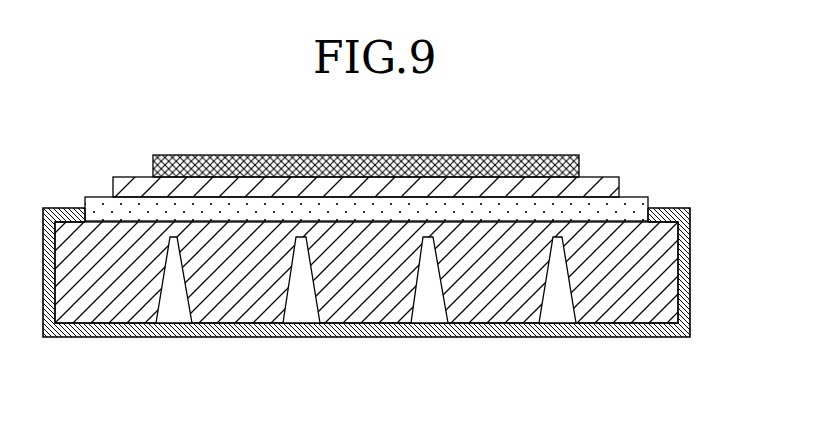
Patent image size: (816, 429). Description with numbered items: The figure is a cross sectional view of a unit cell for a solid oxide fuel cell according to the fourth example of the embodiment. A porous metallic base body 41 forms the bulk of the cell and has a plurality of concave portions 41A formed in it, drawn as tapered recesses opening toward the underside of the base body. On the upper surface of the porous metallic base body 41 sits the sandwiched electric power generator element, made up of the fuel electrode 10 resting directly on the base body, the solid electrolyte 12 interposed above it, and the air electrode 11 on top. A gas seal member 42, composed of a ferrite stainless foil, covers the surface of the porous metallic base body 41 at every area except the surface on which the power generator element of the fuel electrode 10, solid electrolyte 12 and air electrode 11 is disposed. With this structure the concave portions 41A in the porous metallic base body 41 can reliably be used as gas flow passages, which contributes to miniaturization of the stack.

The fuel electrode 10 is at (650, 206).
The air electrode 11 is at (500, 154).
The solid electrolyte 12 is at (620, 181).
The porous metallic base body 41 is at (665, 274).
The concave portions 41A is at (302, 322).
The gas seal member 42 is at (480, 340).